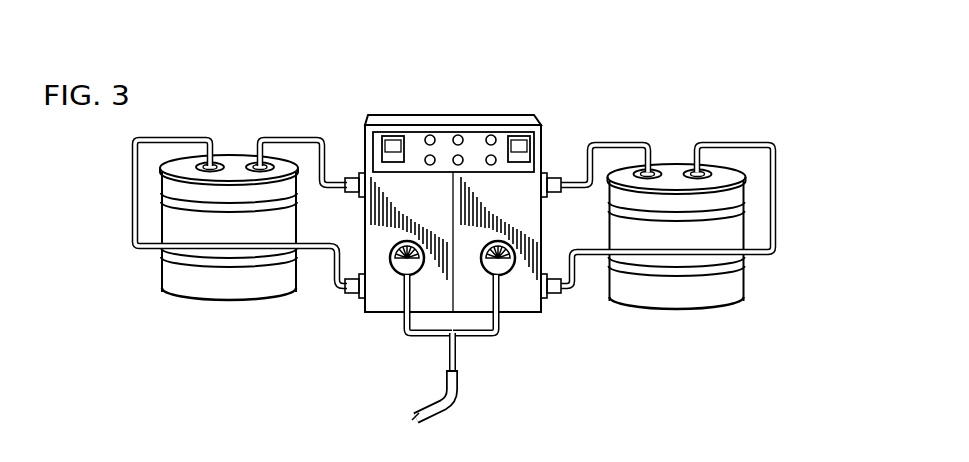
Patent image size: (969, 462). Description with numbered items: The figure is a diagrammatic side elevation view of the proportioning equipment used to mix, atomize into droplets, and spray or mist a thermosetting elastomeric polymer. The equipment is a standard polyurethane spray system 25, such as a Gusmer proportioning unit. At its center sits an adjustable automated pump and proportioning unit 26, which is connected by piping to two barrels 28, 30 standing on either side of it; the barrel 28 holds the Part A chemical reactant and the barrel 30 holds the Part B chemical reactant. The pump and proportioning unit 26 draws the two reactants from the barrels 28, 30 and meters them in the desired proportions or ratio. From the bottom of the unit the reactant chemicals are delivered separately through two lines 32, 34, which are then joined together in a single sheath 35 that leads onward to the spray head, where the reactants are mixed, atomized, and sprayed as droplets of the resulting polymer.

The polyurethane spray system 25 is at (588, 92).
The pump and proportioning unit 26 is at (445, 115).
The barrel 28 is at (233, 153).
The barrel 30 is at (672, 160).
The line 32 is at (403, 337).
The line 34 is at (500, 338).
The sheath 35 is at (453, 398).